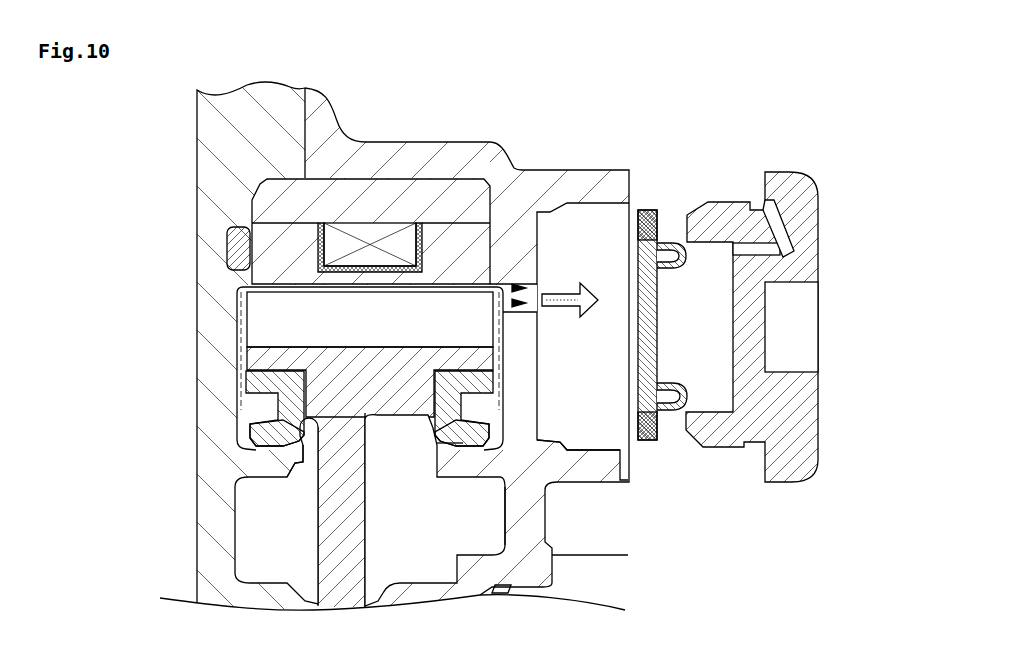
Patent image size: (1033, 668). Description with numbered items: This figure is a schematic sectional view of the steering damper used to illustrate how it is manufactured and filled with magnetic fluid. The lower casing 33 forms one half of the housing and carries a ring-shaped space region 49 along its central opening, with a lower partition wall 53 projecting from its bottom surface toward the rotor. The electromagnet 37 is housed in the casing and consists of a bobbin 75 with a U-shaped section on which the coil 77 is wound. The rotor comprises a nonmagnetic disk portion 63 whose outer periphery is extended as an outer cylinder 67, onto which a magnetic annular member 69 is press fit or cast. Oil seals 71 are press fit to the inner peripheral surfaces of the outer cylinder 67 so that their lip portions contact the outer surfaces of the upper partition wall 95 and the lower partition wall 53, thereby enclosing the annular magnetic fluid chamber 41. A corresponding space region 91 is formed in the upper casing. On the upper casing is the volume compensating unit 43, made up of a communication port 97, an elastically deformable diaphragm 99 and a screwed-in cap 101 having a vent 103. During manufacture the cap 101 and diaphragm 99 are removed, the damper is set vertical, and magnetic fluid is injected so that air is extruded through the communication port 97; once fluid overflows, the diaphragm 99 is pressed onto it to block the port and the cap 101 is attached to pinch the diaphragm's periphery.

The lower casing 33 is at (188, 159).
The electromagnet 37 is at (445, 203).
The bobbin 75 is at (320, 228).
The coil 77 is at (377, 228).
The communication port 97 is at (535, 288).
The outer cylinder 67 is at (250, 360).
The annular member 69 is at (256, 322).
The disk portion 63 is at (367, 545).
The space region 49 is at (288, 546).
The space region 91 is at (443, 526).
The lower partition wall 53 is at (297, 466).
The magnetic fluid chamber 41 is at (240, 415).
The oil seals 71 is at (250, 433).
The upper partition wall 95 is at (505, 493).
The diaphragm 99 is at (658, 325).
The cap 101 is at (793, 483).
The vent 103 is at (780, 235).
The volume compensating unit 43 is at (676, 499).